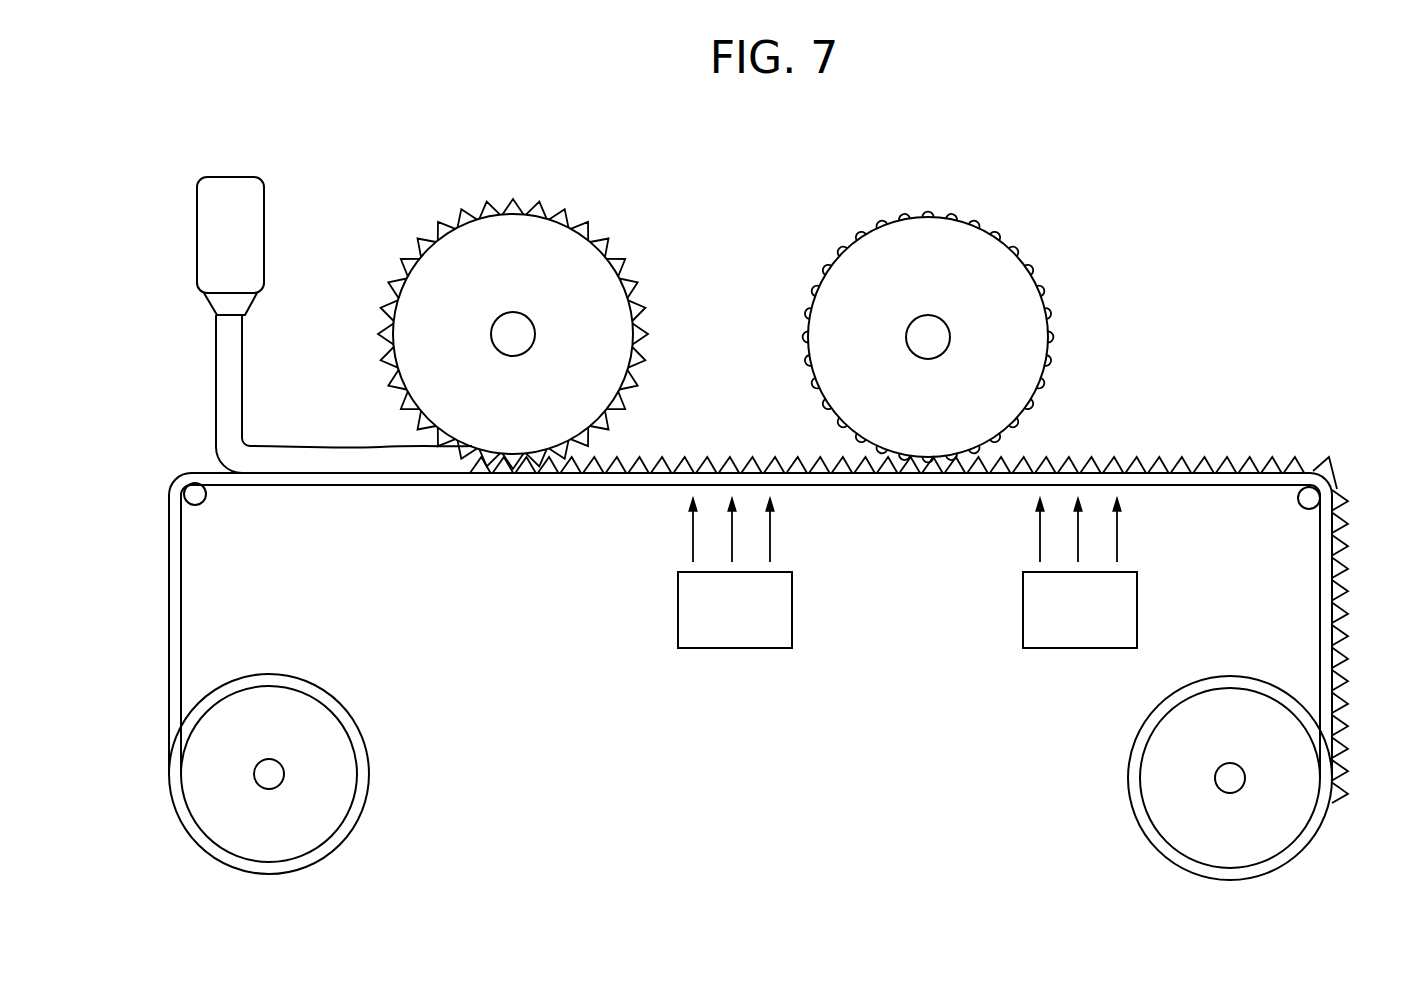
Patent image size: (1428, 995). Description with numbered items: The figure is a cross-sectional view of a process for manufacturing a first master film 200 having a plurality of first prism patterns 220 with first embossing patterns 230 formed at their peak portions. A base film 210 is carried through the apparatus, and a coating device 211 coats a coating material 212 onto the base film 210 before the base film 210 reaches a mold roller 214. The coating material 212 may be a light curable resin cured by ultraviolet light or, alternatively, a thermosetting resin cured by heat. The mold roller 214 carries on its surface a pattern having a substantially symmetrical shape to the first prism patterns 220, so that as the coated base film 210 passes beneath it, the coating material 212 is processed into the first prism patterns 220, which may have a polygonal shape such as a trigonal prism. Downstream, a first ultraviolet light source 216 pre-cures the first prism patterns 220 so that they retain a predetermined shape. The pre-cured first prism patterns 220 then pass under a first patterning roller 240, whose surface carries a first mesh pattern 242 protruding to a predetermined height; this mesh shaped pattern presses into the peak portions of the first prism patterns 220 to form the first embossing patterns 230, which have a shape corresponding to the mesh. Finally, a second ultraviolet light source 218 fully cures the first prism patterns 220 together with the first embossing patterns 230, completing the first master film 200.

The first master film 200 is at (1326, 445).
The base film 210 is at (177, 603).
The coating device 211 is at (206, 237).
The coating material 212 is at (226, 402).
The mold roller 214 is at (512, 226).
The first ultraviolet light source 216 is at (735, 637).
The second ultraviolet light source 218 is at (1077, 637).
The first prism patterns 220 is at (1126, 466).
The first embossing patterns 230 is at (1158, 468).
The first patterning roller 240 is at (930, 229).
The first mesh pattern 242 is at (963, 217).